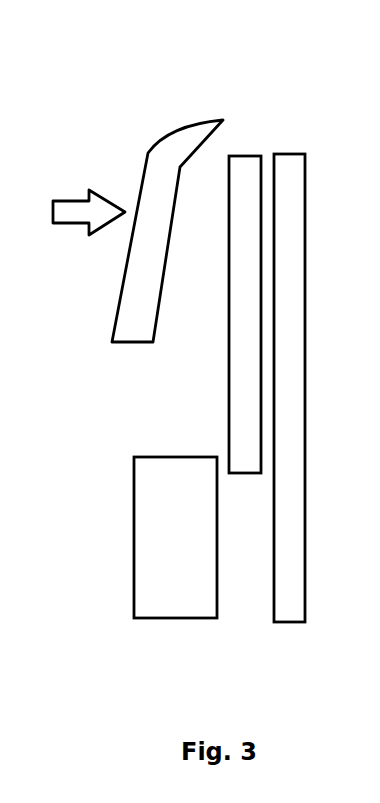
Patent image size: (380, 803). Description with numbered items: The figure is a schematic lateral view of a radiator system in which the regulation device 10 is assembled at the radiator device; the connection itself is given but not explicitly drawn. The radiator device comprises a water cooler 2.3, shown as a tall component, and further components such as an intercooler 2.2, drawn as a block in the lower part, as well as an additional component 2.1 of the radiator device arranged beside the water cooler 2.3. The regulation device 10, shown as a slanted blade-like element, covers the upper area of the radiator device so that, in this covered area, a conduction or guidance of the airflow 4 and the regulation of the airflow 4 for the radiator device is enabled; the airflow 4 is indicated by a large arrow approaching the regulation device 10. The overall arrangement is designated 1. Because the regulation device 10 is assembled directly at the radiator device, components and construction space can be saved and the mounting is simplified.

The arrangement / assembly 1 is at (174, 68).
The regulation device 10 is at (177, 126).
The airflow 4 is at (94, 213).
The first plate / element 2.1 is at (240, 155).
The intercooler 2.2 is at (175, 537).
The water cooler 2.3 is at (290, 153).